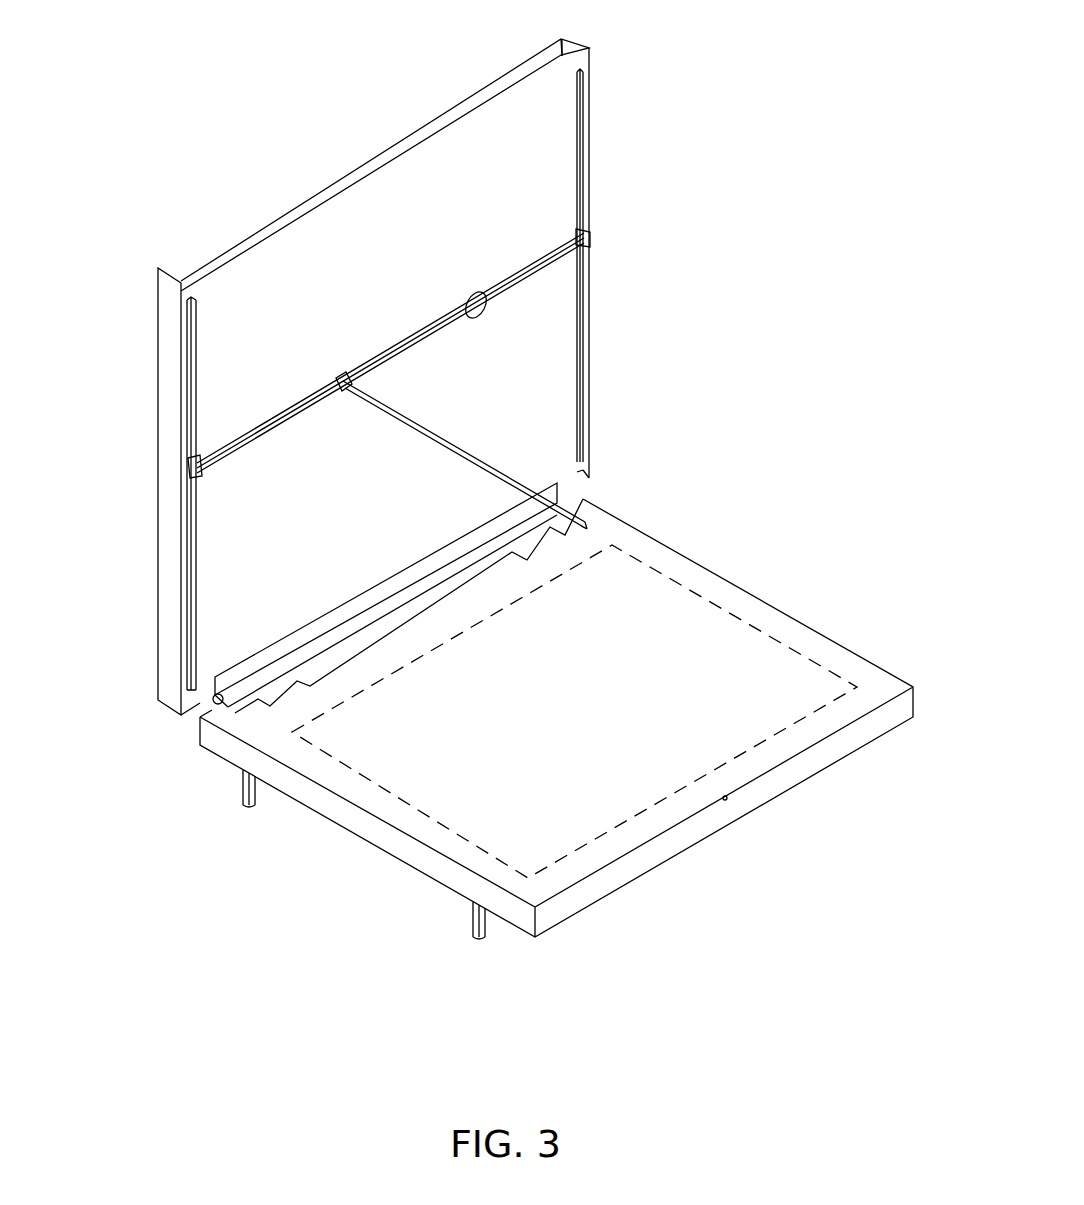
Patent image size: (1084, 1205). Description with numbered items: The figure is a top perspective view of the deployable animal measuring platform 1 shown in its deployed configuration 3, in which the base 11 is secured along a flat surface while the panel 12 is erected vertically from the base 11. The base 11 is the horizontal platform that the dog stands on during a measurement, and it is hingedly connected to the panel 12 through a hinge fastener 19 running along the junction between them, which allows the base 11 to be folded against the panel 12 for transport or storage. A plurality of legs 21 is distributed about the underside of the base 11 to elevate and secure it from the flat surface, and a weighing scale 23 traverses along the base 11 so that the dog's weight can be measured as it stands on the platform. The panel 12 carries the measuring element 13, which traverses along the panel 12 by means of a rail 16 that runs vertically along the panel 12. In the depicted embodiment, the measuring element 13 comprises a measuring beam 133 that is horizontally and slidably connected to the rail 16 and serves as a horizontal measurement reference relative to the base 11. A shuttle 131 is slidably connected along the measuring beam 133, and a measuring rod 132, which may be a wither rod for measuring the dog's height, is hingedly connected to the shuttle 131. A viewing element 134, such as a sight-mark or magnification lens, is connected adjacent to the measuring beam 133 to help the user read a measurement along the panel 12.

The deployable animal measuring platform 1 is at (860, 292).
The deployed configuration 3 is at (121, 452).
The base 11 is at (822, 626).
The panel 12 is at (600, 44).
The measuring element 13 is at (460, 359).
The rail 16 is at (596, 118).
The hinge fastener 19 is at (262, 648).
The legs 21 is at (248, 800).
The weighing scale 23 is at (658, 574).
The shuttle 131 is at (338, 378).
The measuring rod 132 is at (430, 442).
The measuring beam 133 is at (602, 233).
The viewing element 134 is at (488, 312).